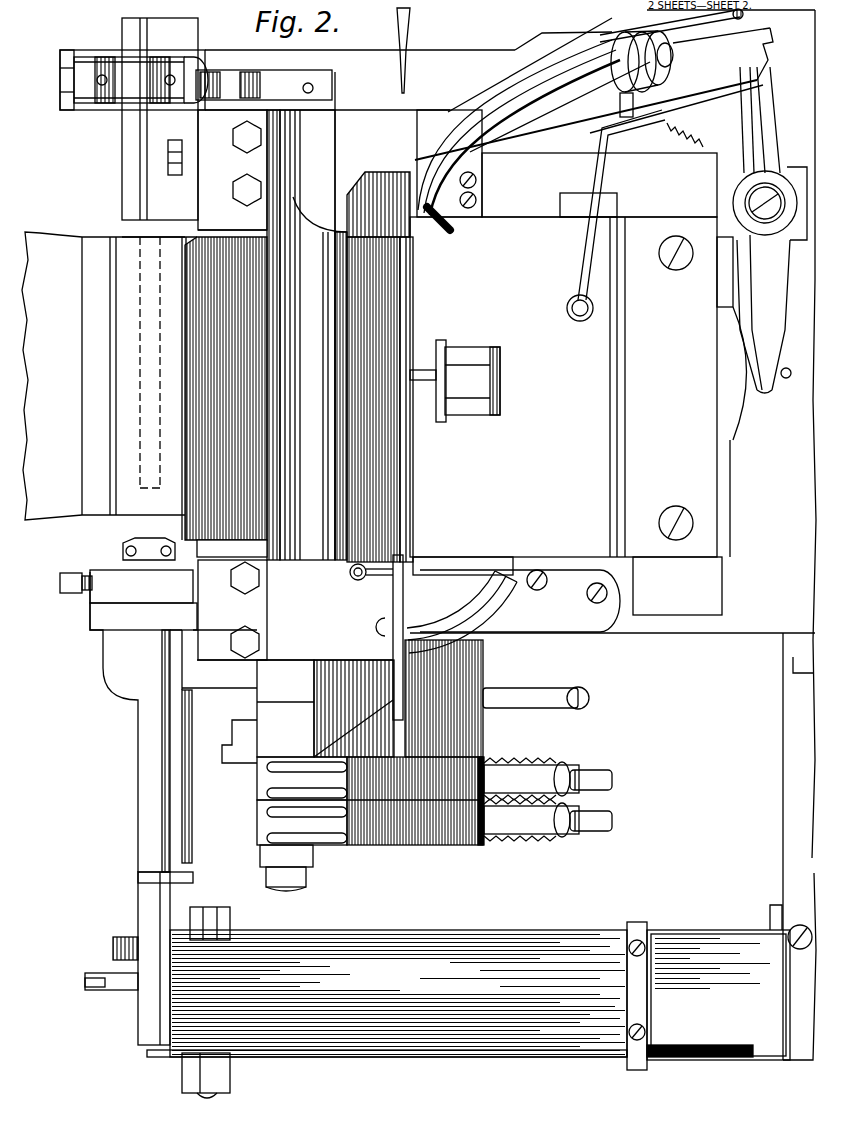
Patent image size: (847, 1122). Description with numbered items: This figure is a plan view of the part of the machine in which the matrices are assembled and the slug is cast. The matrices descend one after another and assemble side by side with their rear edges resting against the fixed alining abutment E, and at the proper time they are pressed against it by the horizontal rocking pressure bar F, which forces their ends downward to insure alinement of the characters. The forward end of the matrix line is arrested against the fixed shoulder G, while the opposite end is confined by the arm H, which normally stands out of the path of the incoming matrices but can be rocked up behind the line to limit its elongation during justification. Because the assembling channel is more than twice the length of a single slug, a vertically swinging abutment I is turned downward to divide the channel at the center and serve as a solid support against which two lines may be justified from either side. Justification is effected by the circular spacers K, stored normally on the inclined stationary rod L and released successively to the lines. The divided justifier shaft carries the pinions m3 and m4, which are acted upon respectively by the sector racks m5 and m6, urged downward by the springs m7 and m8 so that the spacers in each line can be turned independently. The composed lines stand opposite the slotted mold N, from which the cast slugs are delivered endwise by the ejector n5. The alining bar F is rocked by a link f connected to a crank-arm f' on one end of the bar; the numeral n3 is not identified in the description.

The link f is at (134, 80).
The crank-arm f' is at (264, 85).
The pointer n3 is at (381, 51).
The line-confining arm H is at (378, 204).
The rocking pressure bar F is at (307, 316).
The slotted mold N is at (226, 397).
The ejector n5 is at (160, 519).
The sector rack m5 is at (348, 778).
The sector rack m6 is at (350, 826).
The pinion m4 is at (450, 840).
The pinion m3 is at (460, 765).
The spring m7 is at (522, 765).
The spring m8 is at (547, 840).
The alining abutment E is at (612, 393).
The vertically swinging abutment I is at (455, 381).
The fixed shoulder G is at (405, 555).
The circular spacer K is at (678, 70).
The inclined stationary rod L is at (560, 169).